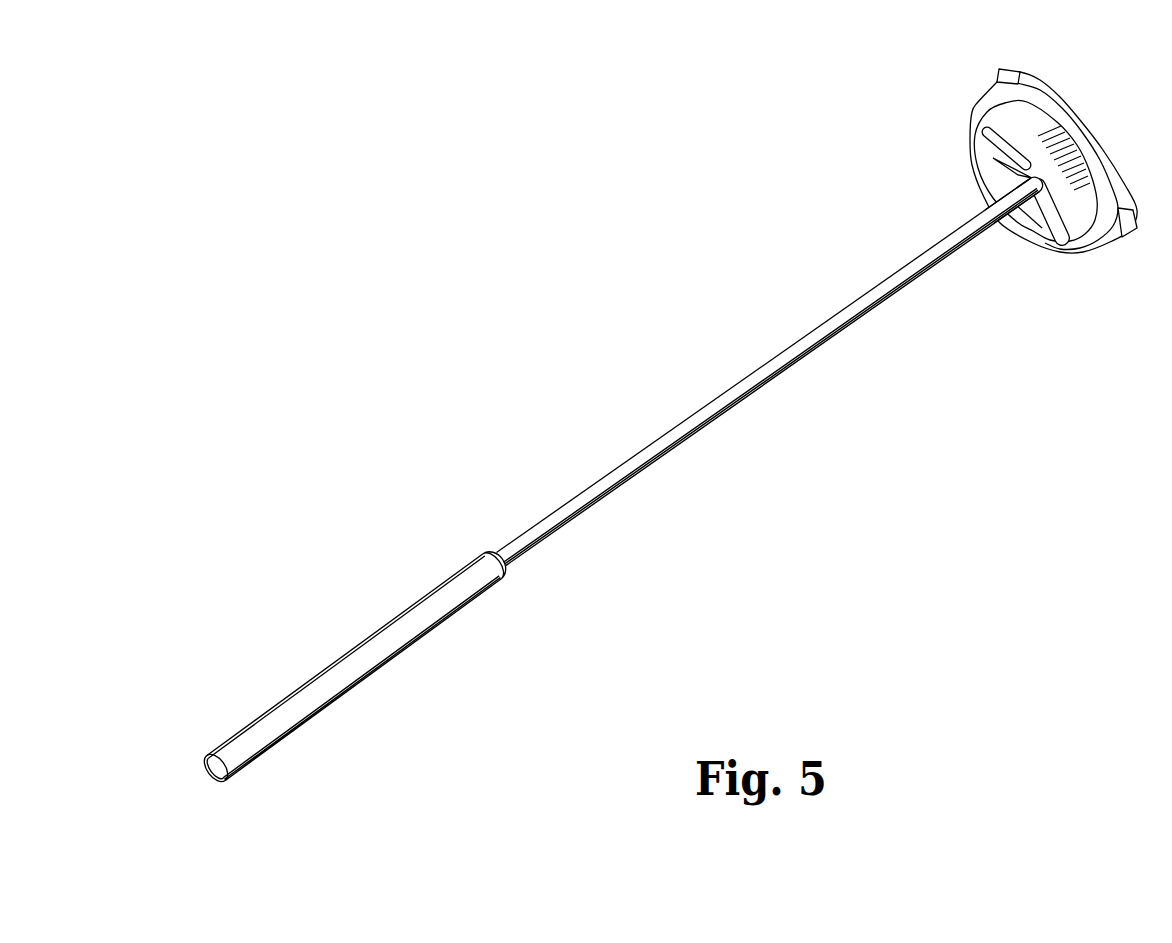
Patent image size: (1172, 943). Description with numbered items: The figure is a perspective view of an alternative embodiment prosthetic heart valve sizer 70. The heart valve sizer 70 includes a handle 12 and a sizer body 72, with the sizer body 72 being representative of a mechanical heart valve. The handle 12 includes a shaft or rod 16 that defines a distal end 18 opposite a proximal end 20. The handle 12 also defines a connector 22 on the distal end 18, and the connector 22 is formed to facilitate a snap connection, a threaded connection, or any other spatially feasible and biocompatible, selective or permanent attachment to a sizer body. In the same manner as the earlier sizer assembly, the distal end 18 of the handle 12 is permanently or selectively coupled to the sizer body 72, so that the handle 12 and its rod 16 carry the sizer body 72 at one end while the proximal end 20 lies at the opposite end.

The prosthetic heart valve sizer 70 is at (669, 406).
The sizer body 72 is at (1053, 146).
The distal end 18 is at (1003, 209).
The handle 12 is at (620, 491).
The shaft or rod 16 is at (708, 405).
The connector 22 is at (353, 677).
The proximal end 20 is at (272, 754).